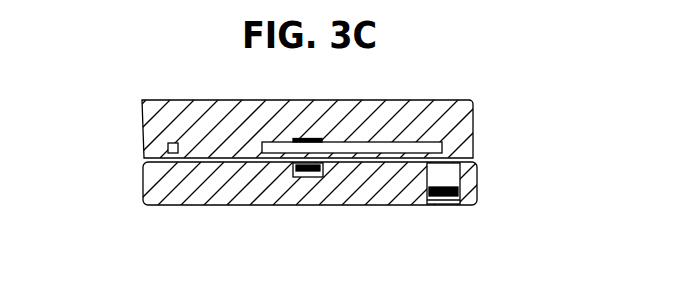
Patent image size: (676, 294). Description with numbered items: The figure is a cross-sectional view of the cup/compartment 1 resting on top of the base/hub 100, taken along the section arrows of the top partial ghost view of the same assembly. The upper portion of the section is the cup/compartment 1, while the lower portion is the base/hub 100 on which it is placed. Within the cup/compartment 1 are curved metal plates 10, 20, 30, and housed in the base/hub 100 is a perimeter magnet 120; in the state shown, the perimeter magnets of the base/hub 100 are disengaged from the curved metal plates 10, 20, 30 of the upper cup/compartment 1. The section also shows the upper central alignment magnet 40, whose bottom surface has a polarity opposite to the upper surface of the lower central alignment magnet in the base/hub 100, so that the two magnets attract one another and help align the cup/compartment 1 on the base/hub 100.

The cup/compartment 1 is at (143, 118).
The curved metal plate 10 is at (168, 150).
The curved metal plate 20 is at (441, 106).
The curved metal plate 30 is at (415, 140).
The upper central alignment magnet 40 is at (310, 178).
The base/hub 100 is at (141, 183).
The perimeter magnet 120 is at (458, 203).